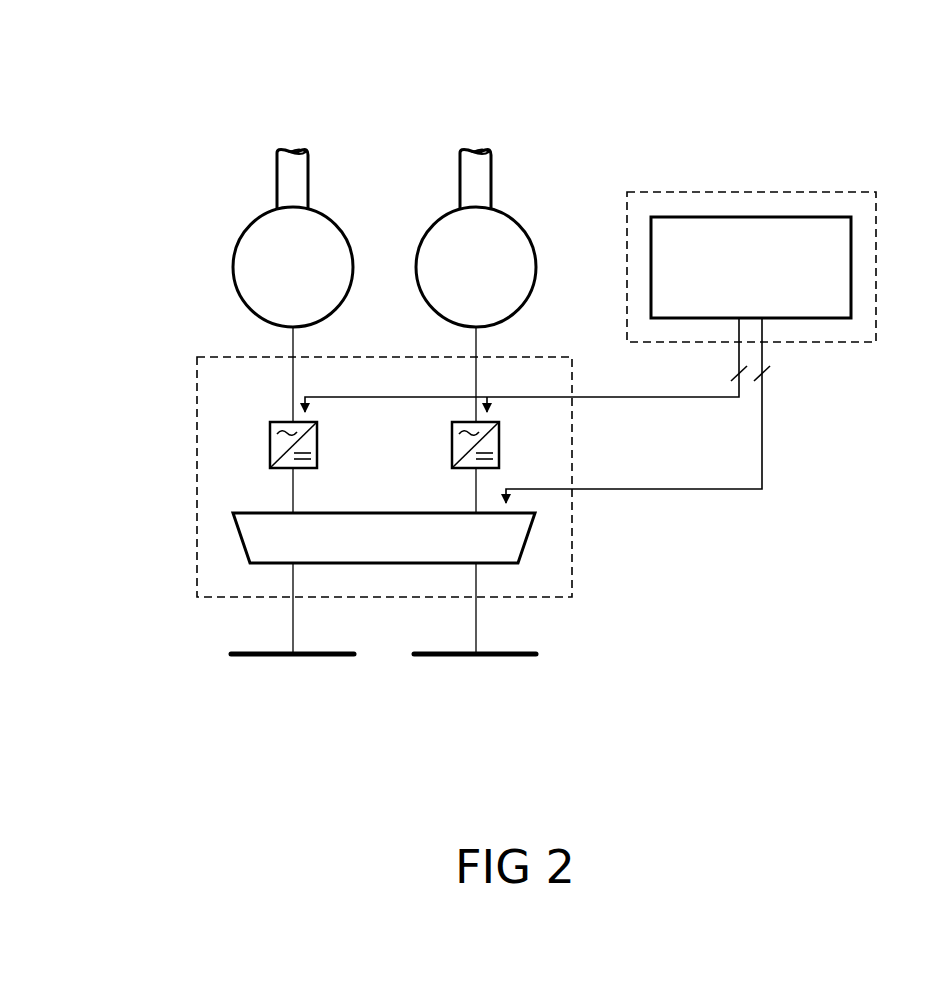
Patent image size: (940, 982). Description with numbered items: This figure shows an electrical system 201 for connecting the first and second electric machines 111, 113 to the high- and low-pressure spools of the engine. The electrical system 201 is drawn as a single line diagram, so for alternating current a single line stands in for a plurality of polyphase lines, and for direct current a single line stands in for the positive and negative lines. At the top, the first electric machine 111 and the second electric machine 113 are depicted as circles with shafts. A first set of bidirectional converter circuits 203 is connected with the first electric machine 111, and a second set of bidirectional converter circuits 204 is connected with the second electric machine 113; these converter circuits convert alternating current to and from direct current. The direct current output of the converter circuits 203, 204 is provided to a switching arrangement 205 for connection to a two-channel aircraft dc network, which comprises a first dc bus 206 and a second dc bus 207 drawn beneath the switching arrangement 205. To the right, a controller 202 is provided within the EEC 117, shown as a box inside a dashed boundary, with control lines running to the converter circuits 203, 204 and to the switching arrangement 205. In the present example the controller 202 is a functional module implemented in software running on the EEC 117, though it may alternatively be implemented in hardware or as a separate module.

The electrical system 201 is at (157, 82).
The first electric machine 111 is at (258, 222).
The second electric machine 113 is at (440, 222).
The EEC 117 is at (640, 192).
The controller 202 is at (852, 312).
The first set of bidirectional converter circuits 203 is at (280, 421).
The second set of bidirectional converter circuits 204 is at (452, 455).
The switching arrangement 205 is at (384, 583).
The first dc bus 206 is at (248, 652).
The second dc bus 207 is at (430, 652).